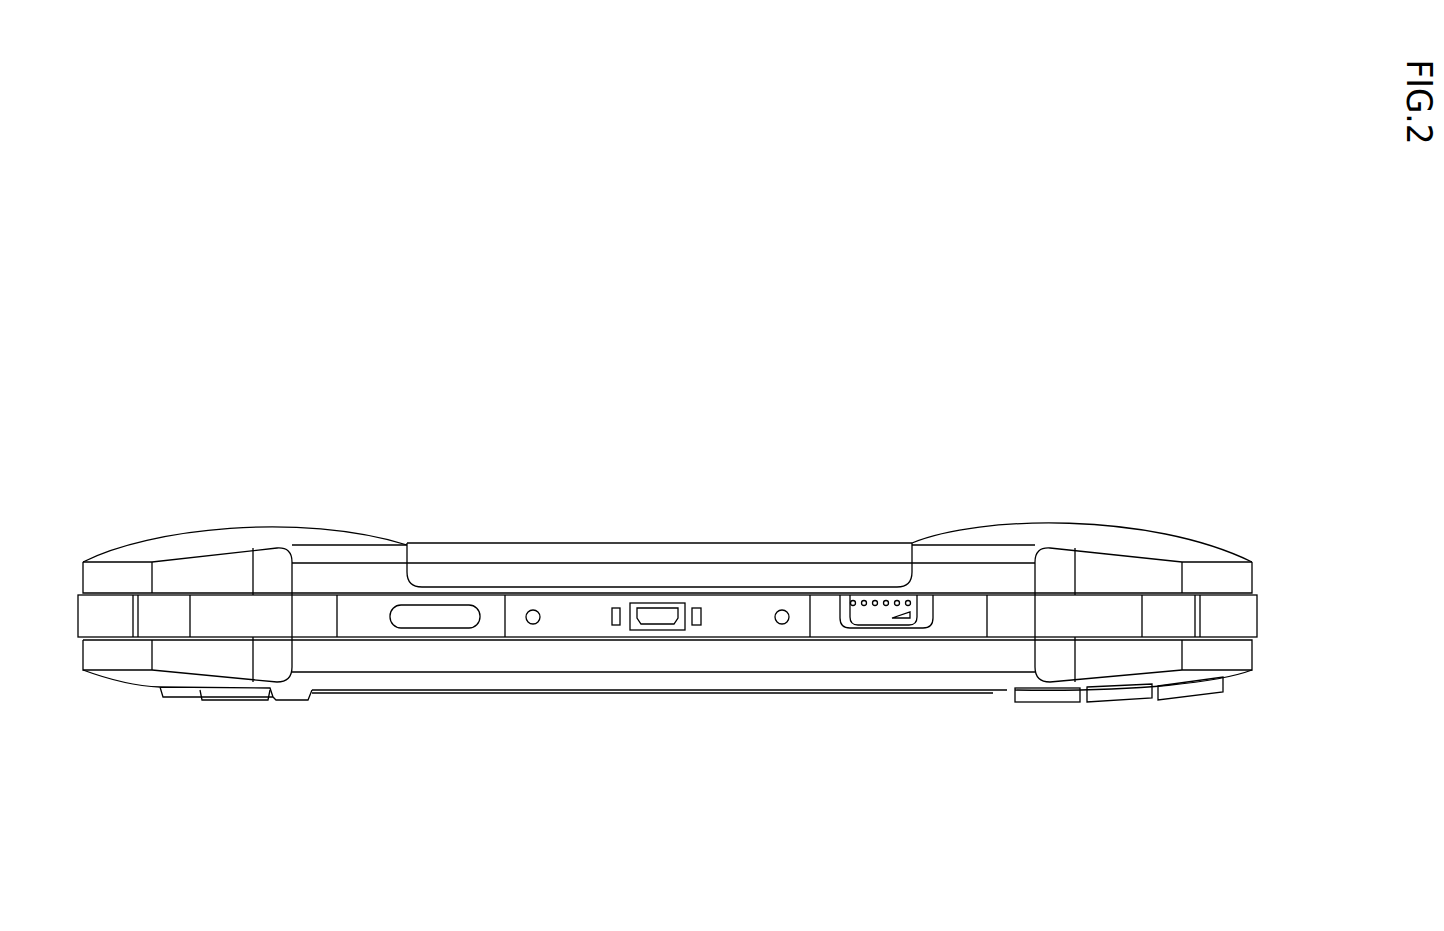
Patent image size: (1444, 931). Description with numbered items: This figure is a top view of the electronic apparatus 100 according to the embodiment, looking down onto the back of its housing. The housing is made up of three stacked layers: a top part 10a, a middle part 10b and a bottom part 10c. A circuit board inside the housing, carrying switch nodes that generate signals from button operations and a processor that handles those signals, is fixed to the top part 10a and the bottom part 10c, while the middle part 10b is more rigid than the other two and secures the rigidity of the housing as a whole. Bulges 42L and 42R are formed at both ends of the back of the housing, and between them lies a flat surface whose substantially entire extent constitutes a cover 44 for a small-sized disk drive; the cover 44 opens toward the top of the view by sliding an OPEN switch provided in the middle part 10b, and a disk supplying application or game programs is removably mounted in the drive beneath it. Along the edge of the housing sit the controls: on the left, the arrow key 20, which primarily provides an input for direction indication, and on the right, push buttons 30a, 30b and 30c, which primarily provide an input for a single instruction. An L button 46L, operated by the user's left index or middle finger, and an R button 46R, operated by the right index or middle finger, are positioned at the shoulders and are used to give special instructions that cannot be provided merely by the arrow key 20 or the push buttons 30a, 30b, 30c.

The electronic apparatus 100 is at (1132, 330).
The top part 10a is at (1245, 655).
The middle part 10b is at (1245, 617).
The bottom part 10c is at (1245, 578).
The arrow key 20 is at (180, 700).
The push button 30a is at (1193, 699).
The push button 30b is at (1120, 702).
The push button 30c is at (1048, 703).
The bulge 42L is at (272, 525).
The bulge 42R is at (1080, 525).
The cover 44 is at (782, 543).
The L button 46L is at (320, 622).
The R button 46R is at (1028, 618).